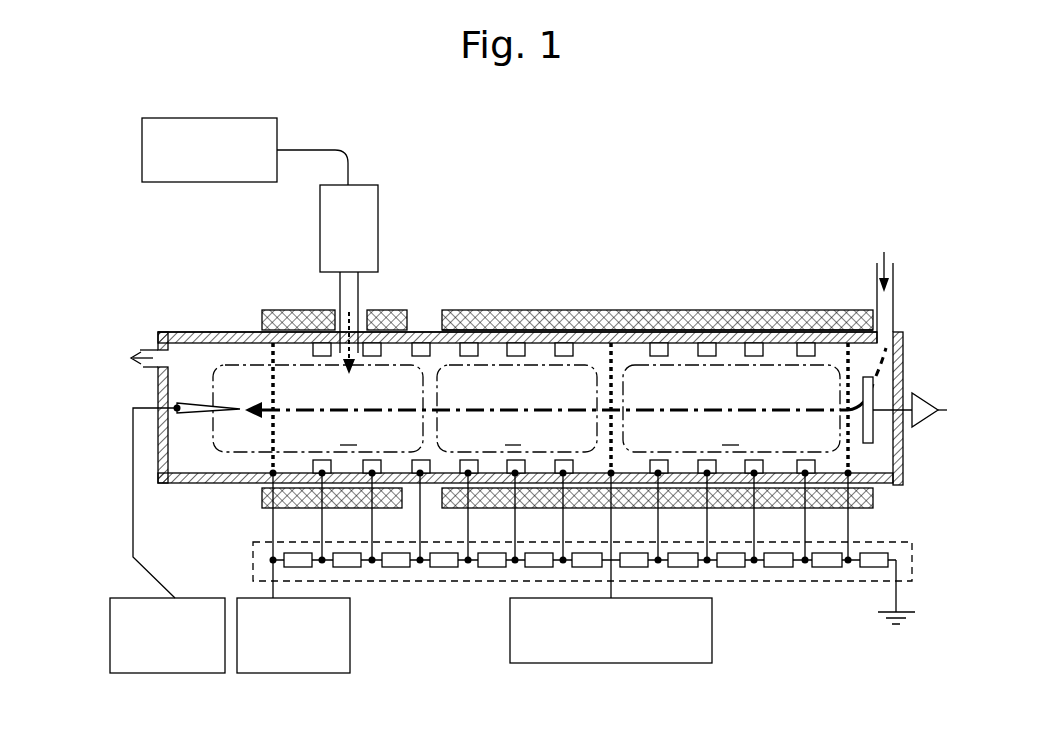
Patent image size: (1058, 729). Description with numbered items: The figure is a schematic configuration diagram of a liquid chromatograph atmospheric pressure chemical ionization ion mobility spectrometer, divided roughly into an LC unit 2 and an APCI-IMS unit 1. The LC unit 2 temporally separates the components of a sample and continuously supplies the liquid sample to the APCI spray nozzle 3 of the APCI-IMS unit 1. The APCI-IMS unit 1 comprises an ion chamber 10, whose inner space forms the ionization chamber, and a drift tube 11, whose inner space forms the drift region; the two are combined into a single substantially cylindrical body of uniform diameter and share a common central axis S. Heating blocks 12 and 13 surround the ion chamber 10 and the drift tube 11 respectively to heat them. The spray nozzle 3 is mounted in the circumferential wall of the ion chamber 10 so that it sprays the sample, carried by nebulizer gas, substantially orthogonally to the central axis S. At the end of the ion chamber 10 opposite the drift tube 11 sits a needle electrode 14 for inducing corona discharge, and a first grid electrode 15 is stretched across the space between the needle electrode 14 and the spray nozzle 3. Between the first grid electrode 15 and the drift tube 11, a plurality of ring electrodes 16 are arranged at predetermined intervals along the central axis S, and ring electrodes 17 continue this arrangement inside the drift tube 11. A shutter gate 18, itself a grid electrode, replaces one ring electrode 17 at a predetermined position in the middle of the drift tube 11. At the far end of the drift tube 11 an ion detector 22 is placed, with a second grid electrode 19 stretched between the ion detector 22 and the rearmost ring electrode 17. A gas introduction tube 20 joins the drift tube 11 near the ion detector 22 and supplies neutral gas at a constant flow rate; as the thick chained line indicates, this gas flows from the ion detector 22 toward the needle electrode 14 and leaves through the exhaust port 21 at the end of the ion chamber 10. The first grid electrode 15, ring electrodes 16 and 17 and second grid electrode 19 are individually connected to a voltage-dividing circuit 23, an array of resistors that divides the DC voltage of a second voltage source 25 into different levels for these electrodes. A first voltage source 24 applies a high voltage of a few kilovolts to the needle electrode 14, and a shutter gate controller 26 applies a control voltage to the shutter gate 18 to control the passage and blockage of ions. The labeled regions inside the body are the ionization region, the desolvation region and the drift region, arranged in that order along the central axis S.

The APCI-IMS unit 1 is at (180, 271).
The LC unit 2 is at (180, 117).
The APCI spray nozzle 3 is at (360, 303).
The ion chamber 10 is at (208, 331).
The drift tube 11 is at (747, 309).
The heating block 12 is at (291, 309).
The heating block 13 is at (794, 309).
The needle electrode 14 is at (177, 408).
The first grid electrode 15 is at (273, 366).
The ring electrodes 16 is at (318, 464).
The ring electrodes 17 is at (705, 347).
The shutter gate 18 is at (607, 354).
The second grid electrode 19 is at (850, 458).
The gas introduction tube 20 is at (893, 292).
The exhaust port 21 is at (150, 348).
The ion detector 22 is at (873, 430).
The voltage-dividing circuit 23 is at (473, 583).
The first voltage source 24 is at (192, 673).
The second voltage source 25 is at (277, 673).
The shutter gate controller 26 is at (617, 663).
The central axis S is at (528, 403).